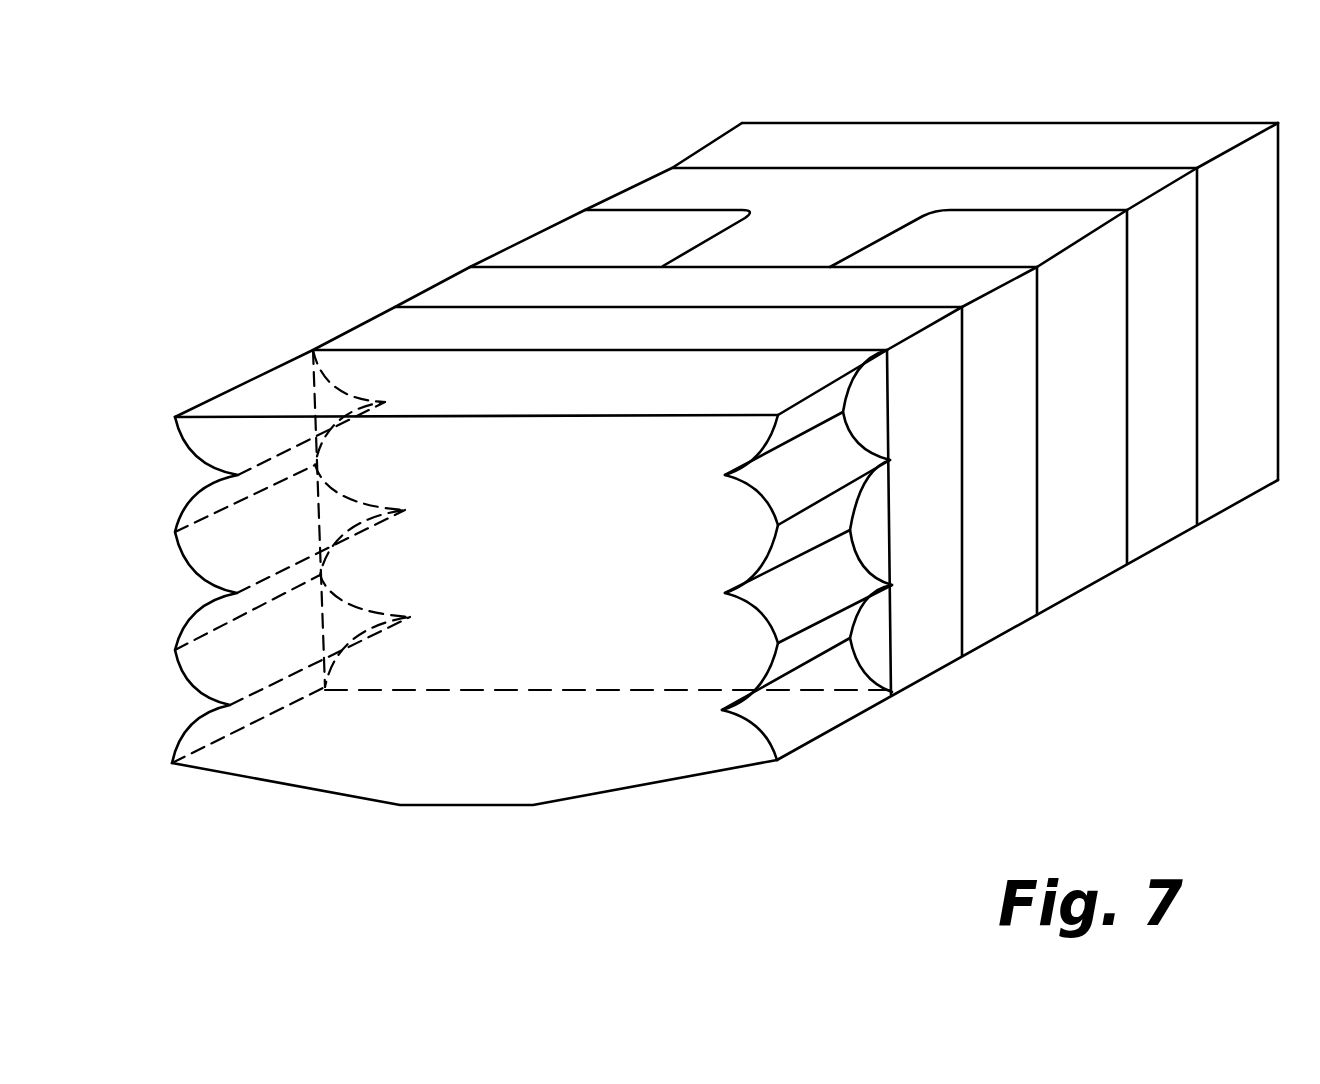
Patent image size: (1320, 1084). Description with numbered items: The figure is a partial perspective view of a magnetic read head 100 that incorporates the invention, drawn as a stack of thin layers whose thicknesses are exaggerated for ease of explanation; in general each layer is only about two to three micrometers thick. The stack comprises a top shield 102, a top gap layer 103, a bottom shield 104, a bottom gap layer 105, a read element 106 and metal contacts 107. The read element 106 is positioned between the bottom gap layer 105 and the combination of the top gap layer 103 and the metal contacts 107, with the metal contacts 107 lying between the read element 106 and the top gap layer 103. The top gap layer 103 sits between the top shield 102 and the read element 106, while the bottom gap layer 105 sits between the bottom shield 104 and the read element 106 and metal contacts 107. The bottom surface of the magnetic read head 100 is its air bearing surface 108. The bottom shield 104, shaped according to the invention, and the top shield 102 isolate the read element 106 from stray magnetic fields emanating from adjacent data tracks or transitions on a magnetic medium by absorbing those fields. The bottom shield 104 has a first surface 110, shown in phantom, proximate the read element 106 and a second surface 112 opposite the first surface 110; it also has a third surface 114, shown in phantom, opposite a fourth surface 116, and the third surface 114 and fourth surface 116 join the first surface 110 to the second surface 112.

The magnetic read head 100 is at (714, 514).
The top shield 102 is at (1263, 241).
The top gap layer 103 is at (1182, 280).
The bottom shield 104 is at (521, 590).
The bottom gap layer 105 is at (944, 410).
The read element 106 is at (1018, 374).
The metal contacts 107 is at (625, 252).
The air bearing surface 108 is at (515, 590).
The first surface 110 is at (413, 373).
The second surface 112 is at (327, 763).
The third surface 114 is at (270, 393).
The fourth surface 116 is at (787, 717).